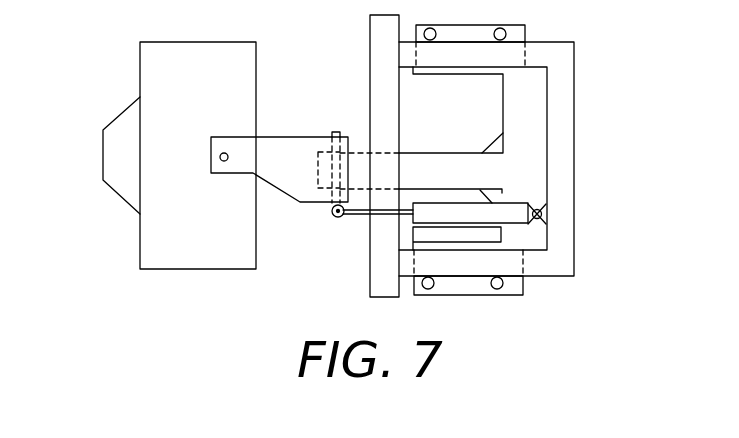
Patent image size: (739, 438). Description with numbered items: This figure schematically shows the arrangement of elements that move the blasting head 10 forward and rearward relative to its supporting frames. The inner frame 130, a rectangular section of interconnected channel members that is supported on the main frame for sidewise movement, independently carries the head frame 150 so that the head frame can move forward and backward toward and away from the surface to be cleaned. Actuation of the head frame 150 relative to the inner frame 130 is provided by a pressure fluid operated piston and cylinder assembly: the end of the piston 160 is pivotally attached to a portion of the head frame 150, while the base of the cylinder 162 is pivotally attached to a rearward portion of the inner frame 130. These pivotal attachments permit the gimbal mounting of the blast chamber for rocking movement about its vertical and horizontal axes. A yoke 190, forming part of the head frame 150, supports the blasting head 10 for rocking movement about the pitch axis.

The blasting head 10 is at (96, 117).
The inner frame 130 is at (575, 68).
The head frame 150 is at (430, 151).
The piston 160 is at (357, 217).
The cylinder 162 is at (511, 203).
The yoke 190 is at (287, 142).